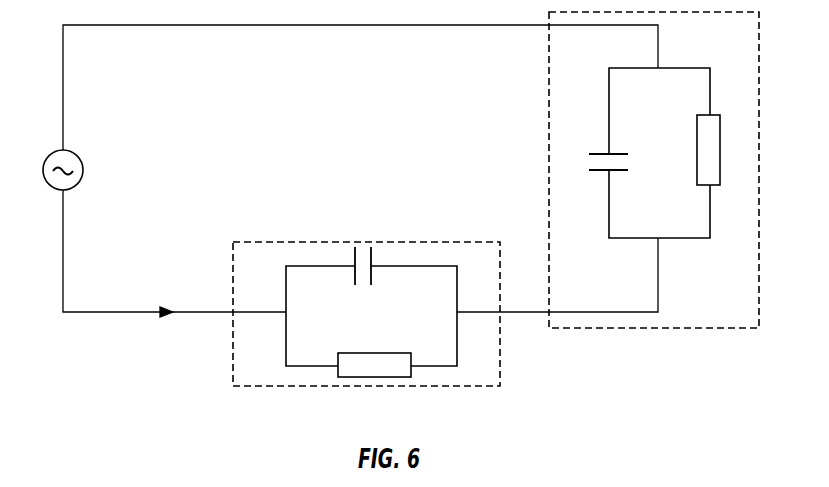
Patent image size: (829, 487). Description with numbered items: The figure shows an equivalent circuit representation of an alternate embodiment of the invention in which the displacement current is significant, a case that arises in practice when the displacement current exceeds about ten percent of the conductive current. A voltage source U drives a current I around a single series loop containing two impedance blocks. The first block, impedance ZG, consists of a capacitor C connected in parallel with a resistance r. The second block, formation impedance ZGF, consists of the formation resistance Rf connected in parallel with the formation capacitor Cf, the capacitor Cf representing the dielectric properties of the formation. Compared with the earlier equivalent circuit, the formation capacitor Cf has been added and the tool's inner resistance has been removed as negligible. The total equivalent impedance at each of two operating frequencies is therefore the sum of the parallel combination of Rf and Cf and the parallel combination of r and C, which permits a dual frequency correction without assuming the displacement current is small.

The voltage source U is at (50, 170).
The current I is at (172, 299).
The impedance ZG is at (366, 314).
The capacitor C is at (352, 283).
The resistance r is at (374, 349).
The formation impedance ZGF is at (654, 170).
The formation capacitor Cf is at (598, 183).
The formation resistance Rf is at (724, 151).